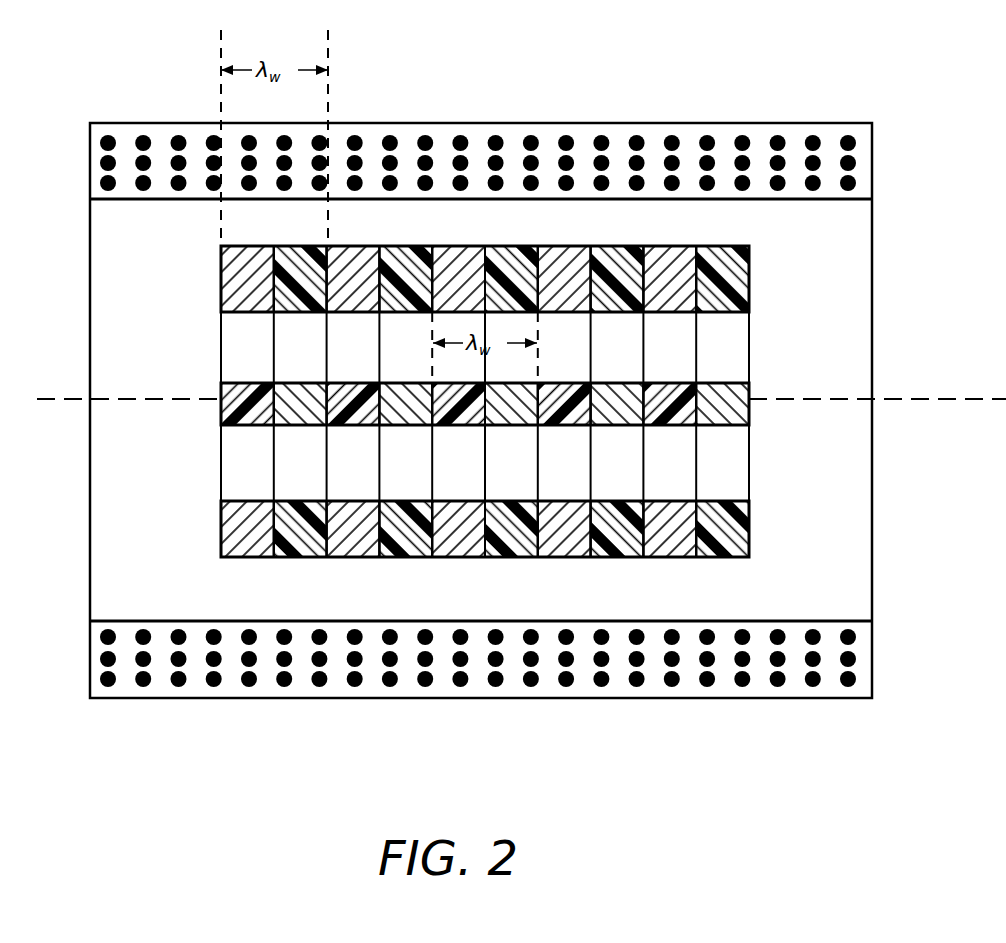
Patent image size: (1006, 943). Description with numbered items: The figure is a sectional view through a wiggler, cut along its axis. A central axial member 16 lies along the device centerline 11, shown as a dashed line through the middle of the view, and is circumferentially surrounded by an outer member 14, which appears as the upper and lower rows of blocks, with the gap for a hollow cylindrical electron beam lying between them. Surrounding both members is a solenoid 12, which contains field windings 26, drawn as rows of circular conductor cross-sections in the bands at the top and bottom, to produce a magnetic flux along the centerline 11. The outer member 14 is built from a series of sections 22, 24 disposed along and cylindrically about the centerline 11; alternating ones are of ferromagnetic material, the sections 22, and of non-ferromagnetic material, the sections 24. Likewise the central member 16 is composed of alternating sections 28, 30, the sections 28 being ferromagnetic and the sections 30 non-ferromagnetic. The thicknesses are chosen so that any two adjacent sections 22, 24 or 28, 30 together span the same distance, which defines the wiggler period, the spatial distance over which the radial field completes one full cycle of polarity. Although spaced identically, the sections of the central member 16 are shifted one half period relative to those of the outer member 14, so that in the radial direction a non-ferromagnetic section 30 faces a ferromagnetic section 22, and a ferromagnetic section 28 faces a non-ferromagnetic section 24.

The device centerline 11 is at (921, 397).
The solenoid 12 is at (872, 270).
The outer member 14 is at (752, 301).
The central axial member 16 is at (752, 397).
The ferromagnetic section 22 is at (249, 246).
The non-ferromagnetic section 24 is at (293, 246).
The field windings 26 is at (398, 140).
The ferromagnetic section 28 is at (264, 382).
The non-ferromagnetic section 30 is at (298, 382).